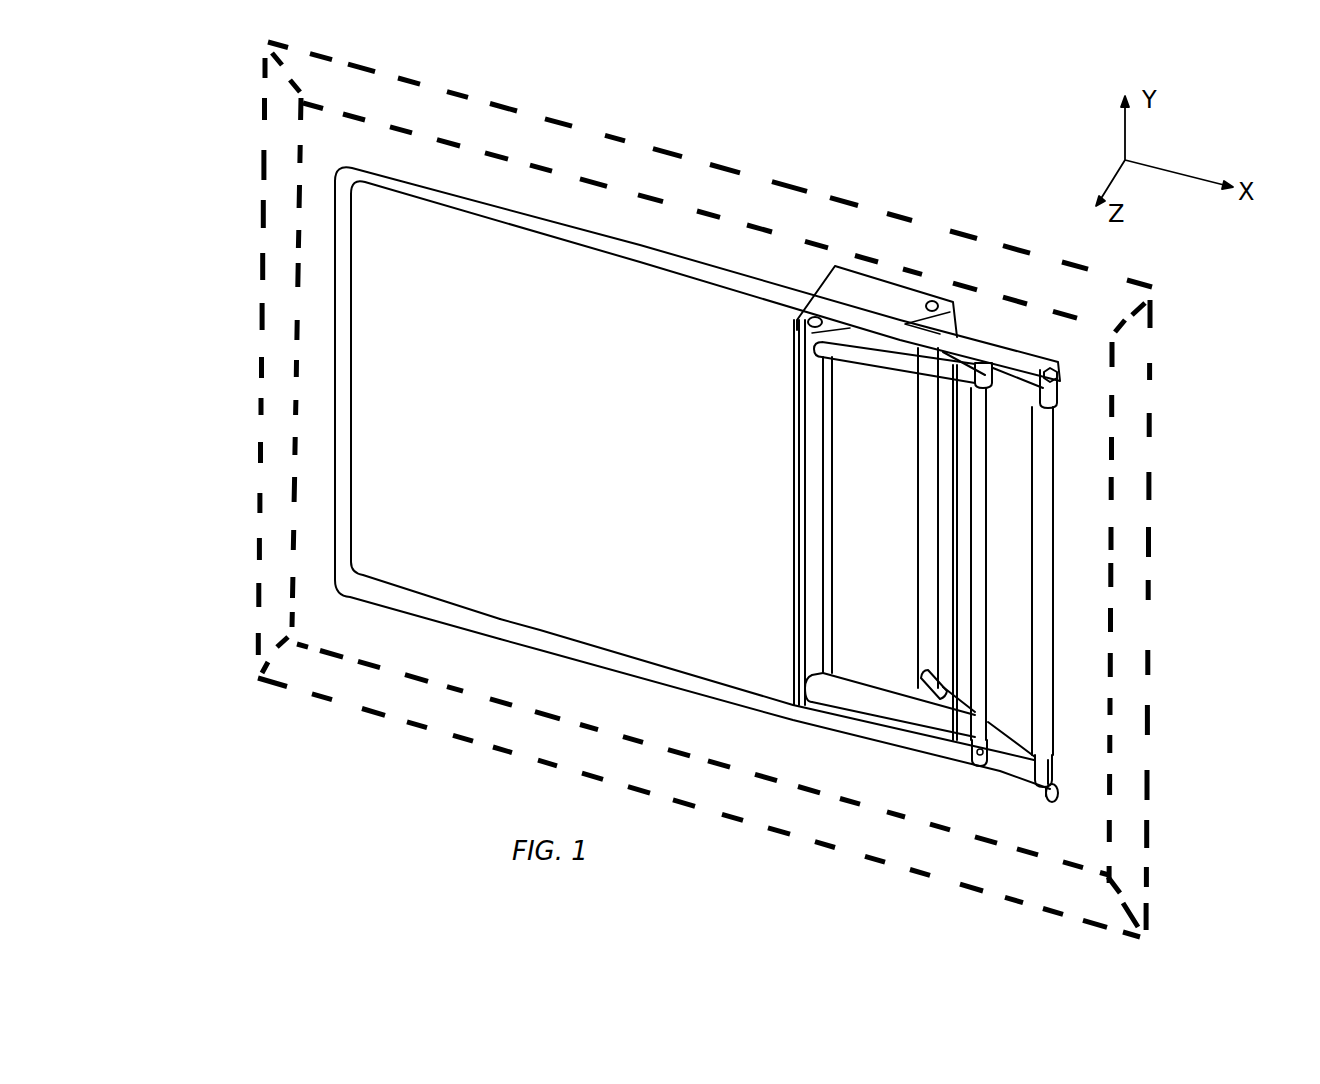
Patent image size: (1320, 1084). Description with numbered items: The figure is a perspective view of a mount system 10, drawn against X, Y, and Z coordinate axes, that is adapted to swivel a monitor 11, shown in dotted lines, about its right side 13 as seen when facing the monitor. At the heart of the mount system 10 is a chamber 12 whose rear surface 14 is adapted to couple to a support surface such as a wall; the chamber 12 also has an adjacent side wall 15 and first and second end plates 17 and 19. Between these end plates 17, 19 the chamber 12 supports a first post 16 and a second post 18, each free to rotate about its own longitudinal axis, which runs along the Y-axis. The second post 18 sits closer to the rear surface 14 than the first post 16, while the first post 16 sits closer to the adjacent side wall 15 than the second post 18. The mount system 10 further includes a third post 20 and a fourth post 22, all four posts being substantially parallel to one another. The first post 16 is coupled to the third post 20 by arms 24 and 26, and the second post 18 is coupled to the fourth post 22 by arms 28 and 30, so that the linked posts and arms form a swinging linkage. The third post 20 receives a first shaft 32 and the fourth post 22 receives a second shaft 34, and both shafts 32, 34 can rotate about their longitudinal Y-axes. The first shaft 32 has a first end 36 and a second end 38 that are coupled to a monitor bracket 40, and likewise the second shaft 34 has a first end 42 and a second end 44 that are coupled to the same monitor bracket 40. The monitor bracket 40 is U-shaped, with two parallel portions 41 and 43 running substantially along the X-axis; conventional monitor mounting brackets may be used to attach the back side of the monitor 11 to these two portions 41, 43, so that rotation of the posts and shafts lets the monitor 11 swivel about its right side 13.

The mount system 10 is at (748, 492).
The monitor 11 is at (540, 133).
The chamber 12 is at (877, 298).
The right side 13 is at (1135, 858).
The rear surface 14 is at (880, 432).
The adjacent side wall 15 is at (797, 392).
The first post 16 is at (812, 515).
The first end plate 17 is at (848, 277).
The second post 18 is at (928, 540).
The second end plate 19 is at (847, 697).
The third post 20 is at (975, 647).
The fourth post 22 is at (1043, 512).
The arm 24 is at (863, 362).
The arm 26 is at (847, 692).
The arm 28 is at (1000, 372).
The arm 30 is at (1020, 735).
The first shaft 32 is at (977, 753).
The second shaft 34 is at (1043, 775).
The first end 36 is at (995, 365).
The second end 38 is at (980, 760).
The monitor bracket 40 is at (437, 598).
The parallel portion 41 is at (550, 228).
The first end 42 is at (1053, 380).
The parallel portion 43 is at (520, 630).
The second end 44 is at (1058, 792).